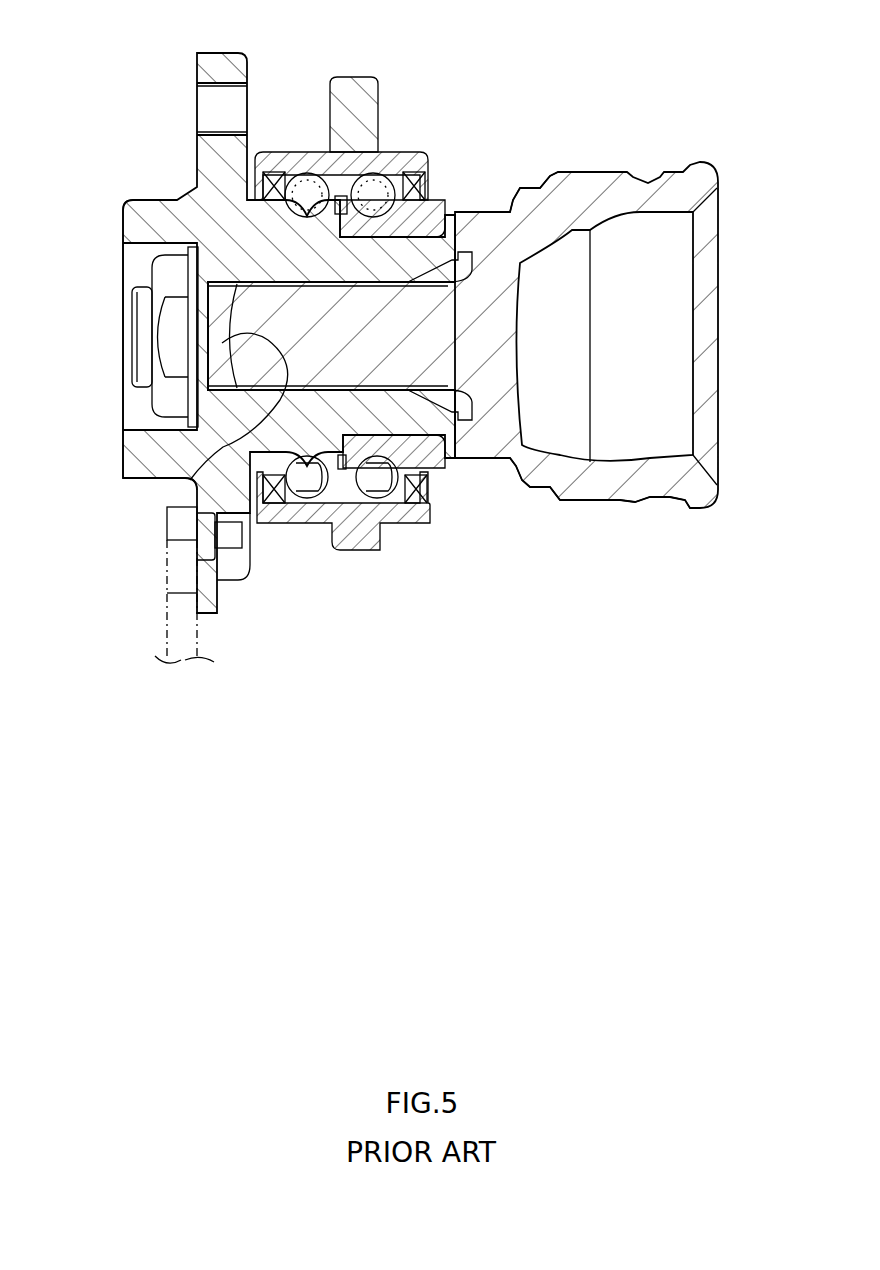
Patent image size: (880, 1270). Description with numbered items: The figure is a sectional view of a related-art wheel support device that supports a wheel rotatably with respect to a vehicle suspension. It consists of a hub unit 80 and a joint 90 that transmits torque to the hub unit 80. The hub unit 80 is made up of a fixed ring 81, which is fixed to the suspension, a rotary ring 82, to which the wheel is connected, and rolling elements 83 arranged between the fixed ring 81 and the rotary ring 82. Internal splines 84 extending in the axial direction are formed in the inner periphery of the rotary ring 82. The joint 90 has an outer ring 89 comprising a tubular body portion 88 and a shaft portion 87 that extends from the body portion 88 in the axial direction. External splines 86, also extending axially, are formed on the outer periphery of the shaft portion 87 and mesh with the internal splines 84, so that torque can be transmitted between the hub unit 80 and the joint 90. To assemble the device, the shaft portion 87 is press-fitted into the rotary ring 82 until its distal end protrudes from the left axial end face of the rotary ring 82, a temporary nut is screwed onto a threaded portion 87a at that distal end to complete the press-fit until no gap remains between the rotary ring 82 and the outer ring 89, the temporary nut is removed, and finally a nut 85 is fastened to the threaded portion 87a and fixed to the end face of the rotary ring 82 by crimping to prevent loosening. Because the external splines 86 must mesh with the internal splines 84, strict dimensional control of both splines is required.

The hub unit 80 is at (370, 147).
The fixed ring 81 is at (300, 150).
The rotary ring 82 is at (197, 187).
The rolling elements 83 is at (306, 497).
The internal splines 84 is at (165, 358).
The nut 85 is at (163, 340).
The external splines 86 is at (187, 444).
The shaft portion 87 is at (262, 312).
The threaded portion 87a is at (140, 302).
The body portion 88 is at (614, 490).
The outer ring 89 is at (514, 200).
The joint 90 is at (601, 164).